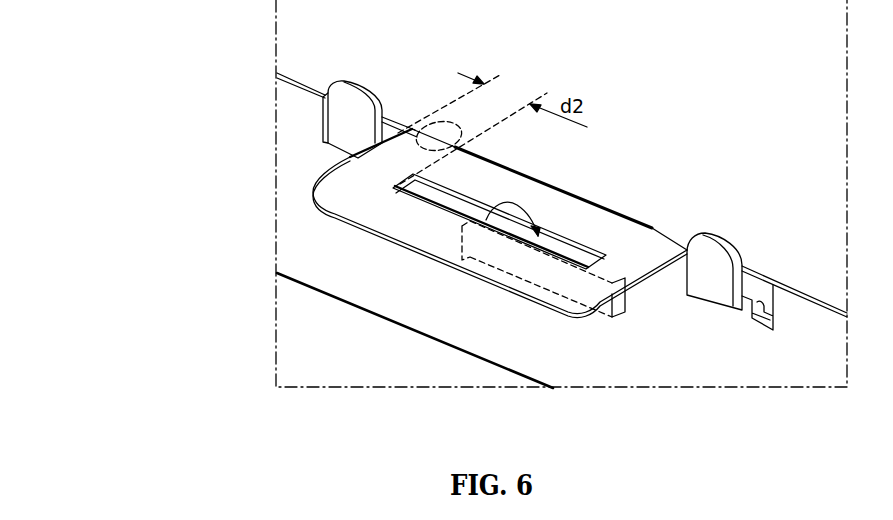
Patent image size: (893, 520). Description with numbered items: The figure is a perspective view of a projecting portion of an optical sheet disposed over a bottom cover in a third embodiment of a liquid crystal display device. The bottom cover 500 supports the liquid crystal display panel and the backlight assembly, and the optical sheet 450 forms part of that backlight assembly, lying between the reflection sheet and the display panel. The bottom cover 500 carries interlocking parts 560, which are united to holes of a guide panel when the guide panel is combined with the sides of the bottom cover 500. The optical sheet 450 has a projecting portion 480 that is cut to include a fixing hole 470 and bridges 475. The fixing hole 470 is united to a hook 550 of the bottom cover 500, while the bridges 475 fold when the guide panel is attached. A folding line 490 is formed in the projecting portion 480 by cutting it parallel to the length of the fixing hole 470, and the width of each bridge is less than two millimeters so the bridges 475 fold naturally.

The optical sheet 450 is at (789, 136).
The fixing hole 470 is at (486, 220).
The bridges 475 is at (423, 142).
The projecting portion 480 is at (115, 287).
The folding line 490 is at (500, 172).
The bottom cover 500 is at (500, 337).
The hook 550 is at (586, 303).
The interlocking parts 560 is at (353, 103).